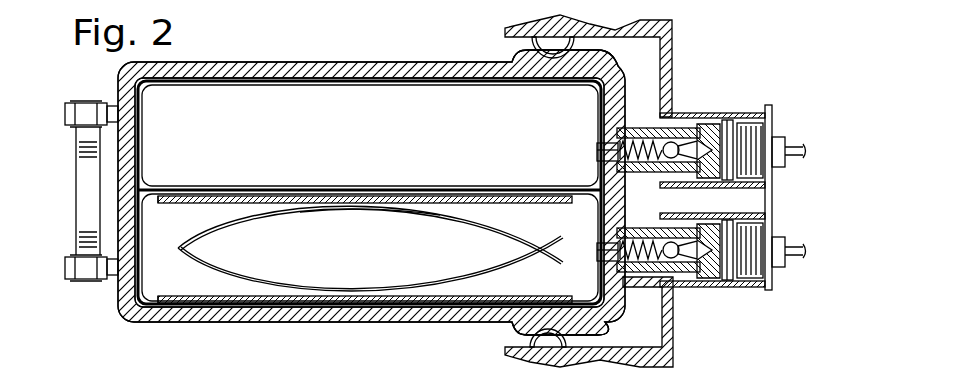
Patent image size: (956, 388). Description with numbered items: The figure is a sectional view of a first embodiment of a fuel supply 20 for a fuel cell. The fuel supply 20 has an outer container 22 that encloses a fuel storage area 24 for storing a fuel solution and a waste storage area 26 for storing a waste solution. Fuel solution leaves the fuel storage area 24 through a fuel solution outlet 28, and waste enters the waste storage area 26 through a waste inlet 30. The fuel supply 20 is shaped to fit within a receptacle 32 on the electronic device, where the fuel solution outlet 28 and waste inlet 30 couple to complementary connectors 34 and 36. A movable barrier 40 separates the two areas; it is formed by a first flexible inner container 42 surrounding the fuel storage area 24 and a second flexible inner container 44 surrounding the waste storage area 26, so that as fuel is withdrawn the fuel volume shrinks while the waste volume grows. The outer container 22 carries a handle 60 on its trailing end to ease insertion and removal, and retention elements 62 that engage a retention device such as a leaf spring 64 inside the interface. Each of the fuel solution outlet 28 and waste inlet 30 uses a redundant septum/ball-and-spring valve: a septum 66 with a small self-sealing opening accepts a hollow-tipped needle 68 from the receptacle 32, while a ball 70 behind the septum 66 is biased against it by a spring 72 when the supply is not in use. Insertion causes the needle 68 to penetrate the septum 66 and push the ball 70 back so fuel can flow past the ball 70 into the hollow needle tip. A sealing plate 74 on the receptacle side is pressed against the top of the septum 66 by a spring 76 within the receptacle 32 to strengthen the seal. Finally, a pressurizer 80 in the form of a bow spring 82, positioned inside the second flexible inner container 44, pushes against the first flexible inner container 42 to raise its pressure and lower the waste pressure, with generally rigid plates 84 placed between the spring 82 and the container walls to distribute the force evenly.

The fuel supply 20 is at (296, 46).
The outer container 22 is at (128, 317).
The fuel storage area 24 is at (277, 140).
The waste storage area 26 is at (344, 261).
The fuel solution outlet 28 is at (643, 118).
The waste inlet 30 is at (645, 283).
The receptacle 32 is at (718, 48).
The complementary connector 34 is at (749, 107).
The complementary connector 36 is at (732, 290).
The movable barrier 40 is at (365, 180).
The first flexible inner container 42 is at (462, 188).
The second flexible inner container 44 is at (593, 205).
The handle 60 is at (84, 199).
The retention element 62 is at (578, 44).
The leaf spring 64 is at (534, 50).
The septum 66 is at (677, 145).
The hollow-tipped needle 68 is at (684, 127).
The ball 70 is at (668, 171).
The spring 72 is at (650, 140).
The sealing plate 74 is at (724, 183).
The spring 76 is at (780, 137).
The pressurizer 80 is at (394, 276).
The spring 82 is at (243, 222).
The rigid plate 84 is at (174, 297).